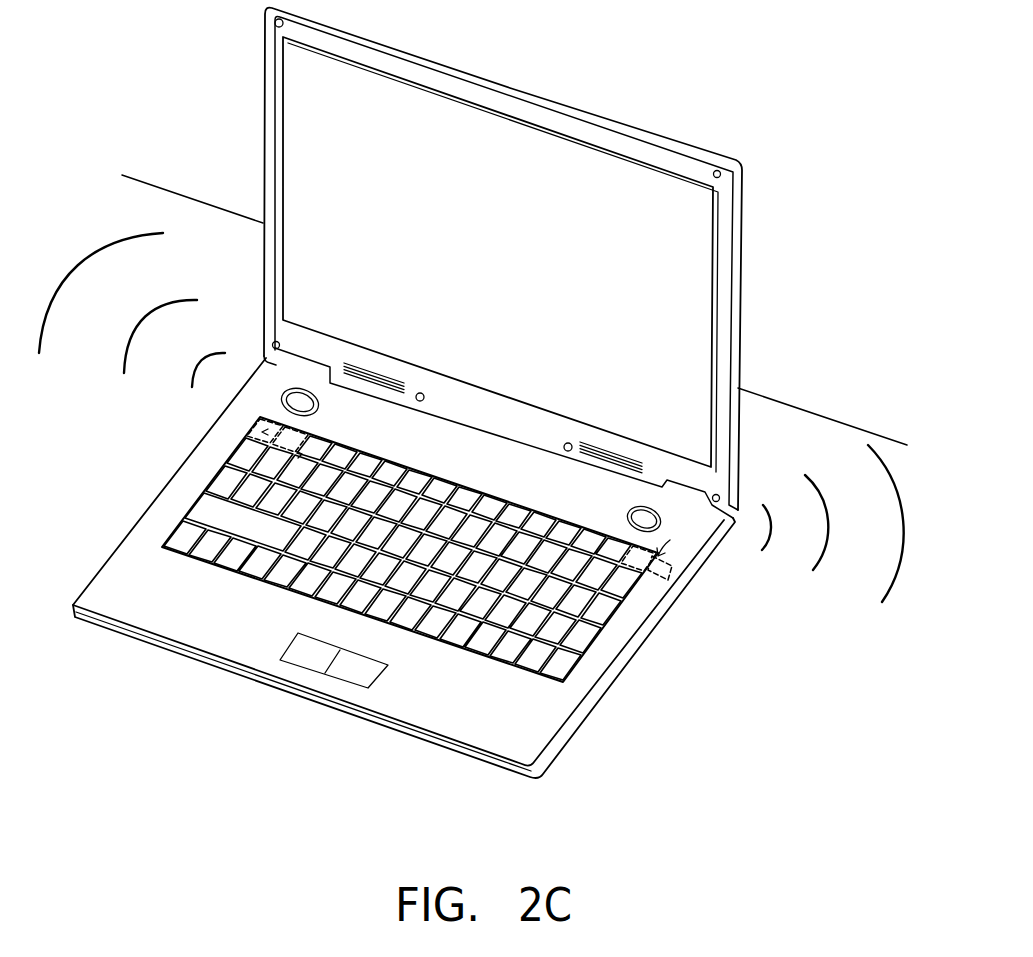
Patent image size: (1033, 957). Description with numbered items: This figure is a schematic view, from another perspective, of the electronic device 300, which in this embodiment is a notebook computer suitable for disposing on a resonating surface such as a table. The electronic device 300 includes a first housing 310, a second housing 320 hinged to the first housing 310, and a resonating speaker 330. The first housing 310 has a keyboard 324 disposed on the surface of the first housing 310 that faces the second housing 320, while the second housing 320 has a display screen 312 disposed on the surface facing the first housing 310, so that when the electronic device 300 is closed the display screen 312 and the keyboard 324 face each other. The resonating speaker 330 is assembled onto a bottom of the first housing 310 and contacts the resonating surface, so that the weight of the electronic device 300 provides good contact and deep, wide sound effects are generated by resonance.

The electronic device 300 is at (486, 393).
The first housing 310 is at (427, 563).
The display screen 312 is at (688, 273).
The second housing 320 is at (547, 259).
The keyboard 324 is at (226, 501).
The resonating speaker 330 is at (683, 549).